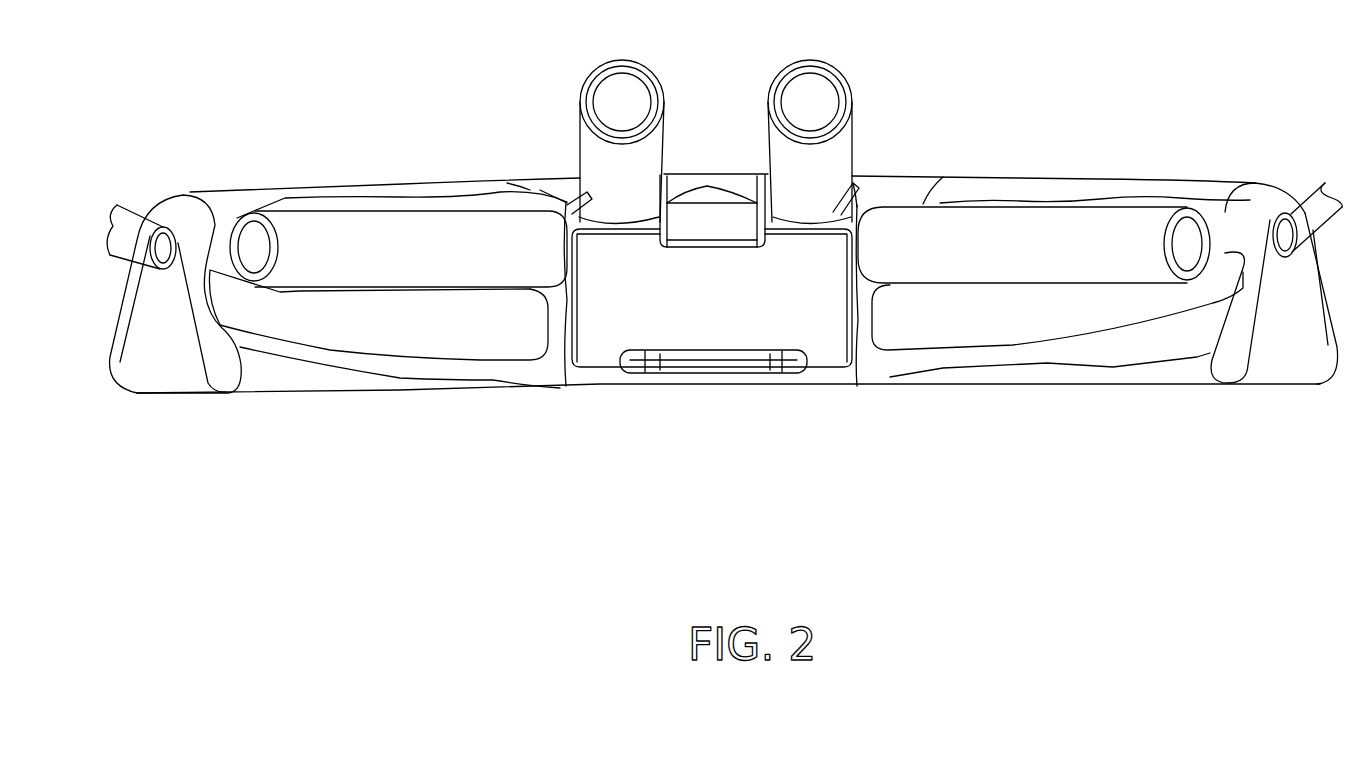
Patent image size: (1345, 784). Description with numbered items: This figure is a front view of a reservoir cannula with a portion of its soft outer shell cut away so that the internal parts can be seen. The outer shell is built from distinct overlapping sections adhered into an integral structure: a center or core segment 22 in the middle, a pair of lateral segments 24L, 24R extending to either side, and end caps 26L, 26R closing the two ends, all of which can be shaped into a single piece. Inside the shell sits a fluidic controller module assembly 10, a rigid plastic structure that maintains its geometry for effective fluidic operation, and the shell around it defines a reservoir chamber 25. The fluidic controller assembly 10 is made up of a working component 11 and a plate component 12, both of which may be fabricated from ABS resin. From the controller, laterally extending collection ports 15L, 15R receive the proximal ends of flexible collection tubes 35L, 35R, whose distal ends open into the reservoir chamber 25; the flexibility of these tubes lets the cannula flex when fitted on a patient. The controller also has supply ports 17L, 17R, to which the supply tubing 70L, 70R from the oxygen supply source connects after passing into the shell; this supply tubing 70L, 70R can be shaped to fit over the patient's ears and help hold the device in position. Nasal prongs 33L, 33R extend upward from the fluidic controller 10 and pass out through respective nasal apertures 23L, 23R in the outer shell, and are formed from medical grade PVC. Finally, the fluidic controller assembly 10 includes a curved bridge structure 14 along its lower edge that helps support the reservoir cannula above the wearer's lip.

The fluidic controller module assembly 10 is at (707, 192).
The working component 11 is at (720, 235).
The plate component 12 is at (722, 310).
The curved bridge structure 14 is at (737, 370).
The left collection port 15L is at (567, 192).
The right collection port 15R is at (860, 202).
The left supply port 17L is at (557, 357).
The right supply port 17R is at (866, 337).
The center or core segment 22 is at (740, 183).
The left nasal aperture 23L is at (583, 180).
The right nasal aperture 23R is at (872, 130).
The left lateral segment 24L is at (292, 190).
The right lateral segment 24R is at (1036, 183).
The reservoir chamber 25 is at (503, 370).
The left end cap 26L is at (165, 375).
The right end cap 26R is at (1274, 365).
The left nasal prong 33L is at (571, 160).
The right nasal prong 33R is at (855, 165).
The left collection tube 35L is at (398, 249).
The right collection tube 35R is at (1034, 245).
The left supply tubing 70L is at (128, 298).
The right supply tubing 70R is at (1313, 200).